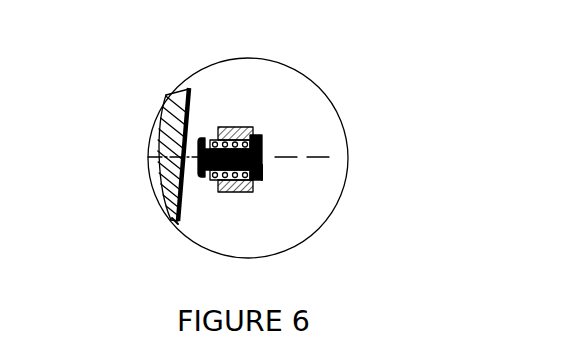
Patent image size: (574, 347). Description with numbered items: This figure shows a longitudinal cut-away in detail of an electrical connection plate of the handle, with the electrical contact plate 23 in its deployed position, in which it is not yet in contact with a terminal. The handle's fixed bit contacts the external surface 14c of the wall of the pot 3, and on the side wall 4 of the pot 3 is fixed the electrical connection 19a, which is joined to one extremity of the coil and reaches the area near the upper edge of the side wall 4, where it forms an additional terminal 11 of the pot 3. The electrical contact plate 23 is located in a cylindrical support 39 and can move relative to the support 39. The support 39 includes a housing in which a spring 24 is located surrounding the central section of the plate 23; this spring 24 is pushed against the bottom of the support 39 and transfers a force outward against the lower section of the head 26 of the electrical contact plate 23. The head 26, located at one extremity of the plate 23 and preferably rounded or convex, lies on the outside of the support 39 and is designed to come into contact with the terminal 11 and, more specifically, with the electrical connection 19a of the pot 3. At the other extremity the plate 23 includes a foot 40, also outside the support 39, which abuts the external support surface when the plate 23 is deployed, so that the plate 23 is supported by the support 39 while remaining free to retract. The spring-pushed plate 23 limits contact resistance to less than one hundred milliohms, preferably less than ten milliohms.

The pot 3 is at (138, 166).
The side wall 4 is at (168, 112).
The external surface 14c is at (190, 82).
The electrical connection 19a is at (172, 218).
The additional terminal 11 is at (258, 163).
The cylindrical support 39 is at (243, 127).
The electrical contact plate 23 is at (263, 156).
The spring 24 is at (233, 190).
The head 26 is at (207, 177).
The foot 40 is at (263, 172).